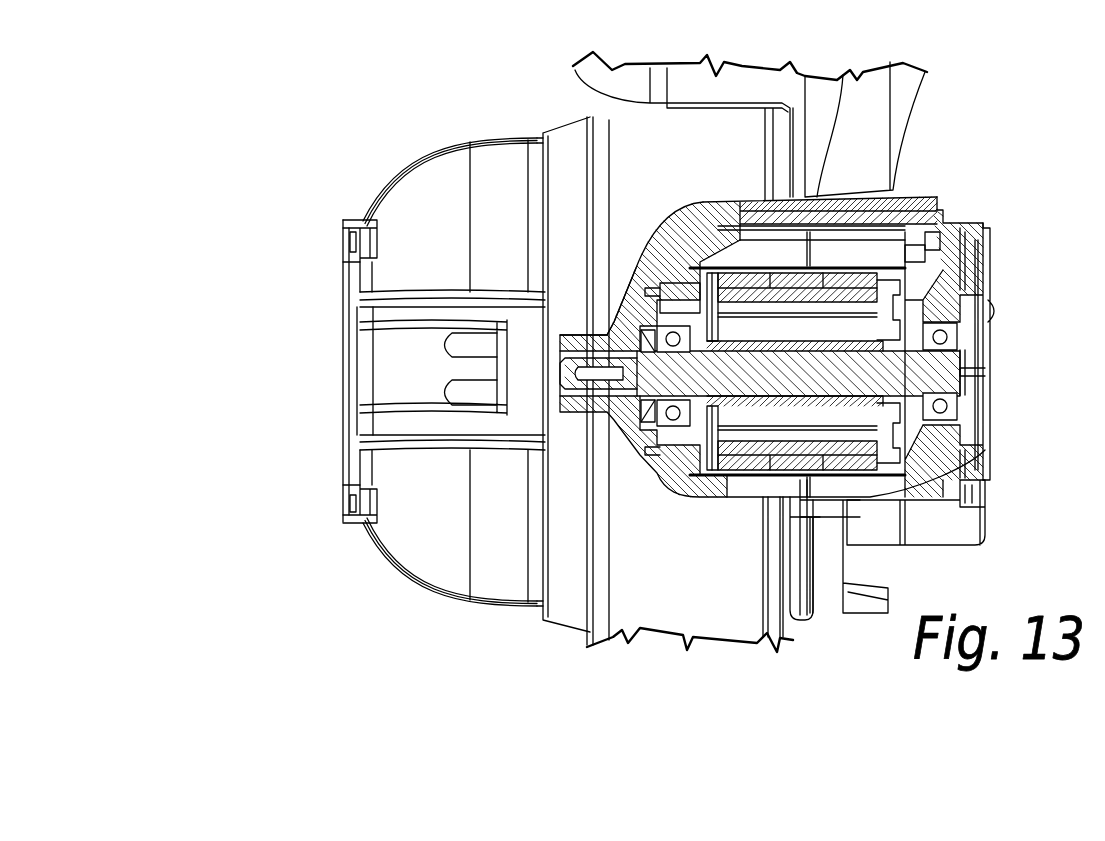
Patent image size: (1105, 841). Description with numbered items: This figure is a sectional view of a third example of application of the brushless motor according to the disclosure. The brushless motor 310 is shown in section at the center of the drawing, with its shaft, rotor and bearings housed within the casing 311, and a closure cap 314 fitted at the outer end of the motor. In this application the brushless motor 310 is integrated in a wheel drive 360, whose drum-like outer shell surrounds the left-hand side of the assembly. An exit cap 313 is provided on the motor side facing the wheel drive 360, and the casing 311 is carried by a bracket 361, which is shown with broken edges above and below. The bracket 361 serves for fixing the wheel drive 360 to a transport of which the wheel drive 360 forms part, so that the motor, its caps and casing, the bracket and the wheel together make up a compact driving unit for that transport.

The wheel drive 360 is at (335, 603).
The bracket 361 is at (768, 80).
The casing 311 is at (828, 82).
The brushless motor 310 is at (924, 191).
The closure cap 314 is at (992, 237).
The exit cap 313 is at (636, 302).